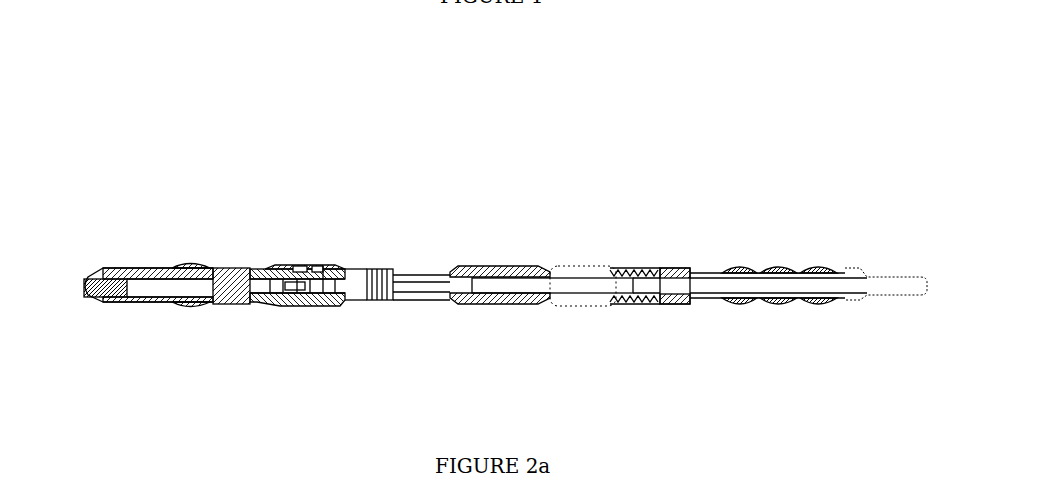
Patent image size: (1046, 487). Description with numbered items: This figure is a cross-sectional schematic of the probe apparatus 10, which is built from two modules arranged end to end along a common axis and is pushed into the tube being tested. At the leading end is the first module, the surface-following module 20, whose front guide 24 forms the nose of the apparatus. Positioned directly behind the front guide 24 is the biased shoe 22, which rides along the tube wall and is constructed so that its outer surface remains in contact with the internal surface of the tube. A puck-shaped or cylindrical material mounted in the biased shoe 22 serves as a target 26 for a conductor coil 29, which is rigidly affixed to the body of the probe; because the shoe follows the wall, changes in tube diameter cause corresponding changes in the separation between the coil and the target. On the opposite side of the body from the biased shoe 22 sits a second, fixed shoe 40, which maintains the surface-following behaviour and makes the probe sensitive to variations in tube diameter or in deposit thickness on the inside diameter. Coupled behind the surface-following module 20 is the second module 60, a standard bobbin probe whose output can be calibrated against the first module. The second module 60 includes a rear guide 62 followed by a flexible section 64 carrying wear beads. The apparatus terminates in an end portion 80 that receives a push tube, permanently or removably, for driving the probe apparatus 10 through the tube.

The probe apparatus 10 is at (758, 212).
The surface-following module 20 is at (328, 220).
The biased shoe 22 is at (300, 298).
The front guide 24 is at (95, 300).
The target 26 is at (325, 307).
The conductor coil 29 is at (300, 264).
The fixed shoe 40 is at (327, 265).
The second module 60 is at (607, 230).
The rear guide 62 is at (568, 263).
The flexible section 64 is at (817, 303).
The end portion 80 is at (900, 295).